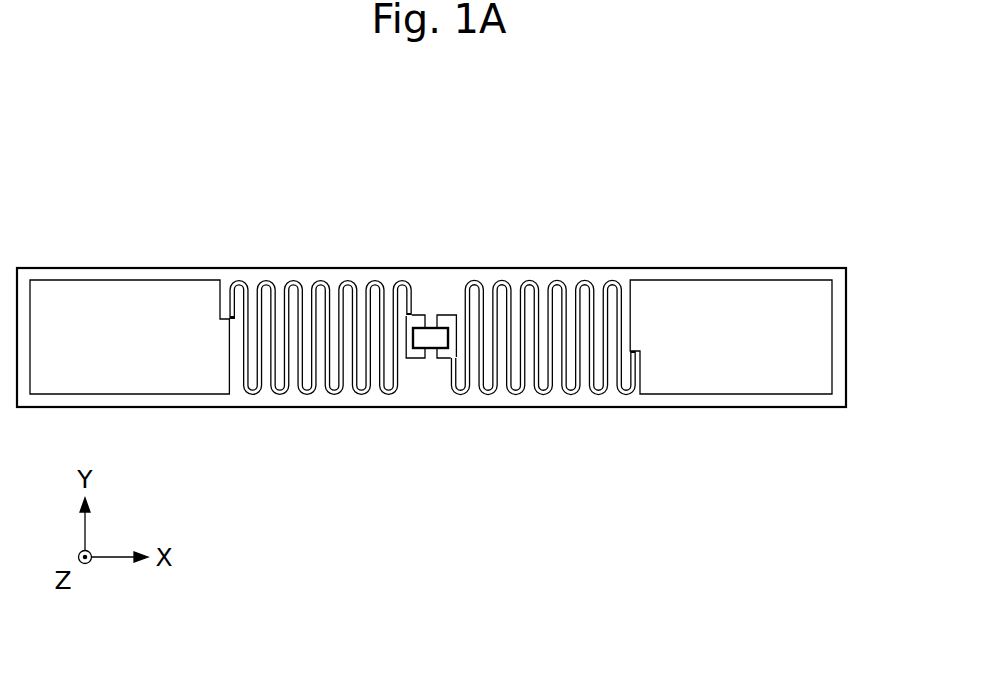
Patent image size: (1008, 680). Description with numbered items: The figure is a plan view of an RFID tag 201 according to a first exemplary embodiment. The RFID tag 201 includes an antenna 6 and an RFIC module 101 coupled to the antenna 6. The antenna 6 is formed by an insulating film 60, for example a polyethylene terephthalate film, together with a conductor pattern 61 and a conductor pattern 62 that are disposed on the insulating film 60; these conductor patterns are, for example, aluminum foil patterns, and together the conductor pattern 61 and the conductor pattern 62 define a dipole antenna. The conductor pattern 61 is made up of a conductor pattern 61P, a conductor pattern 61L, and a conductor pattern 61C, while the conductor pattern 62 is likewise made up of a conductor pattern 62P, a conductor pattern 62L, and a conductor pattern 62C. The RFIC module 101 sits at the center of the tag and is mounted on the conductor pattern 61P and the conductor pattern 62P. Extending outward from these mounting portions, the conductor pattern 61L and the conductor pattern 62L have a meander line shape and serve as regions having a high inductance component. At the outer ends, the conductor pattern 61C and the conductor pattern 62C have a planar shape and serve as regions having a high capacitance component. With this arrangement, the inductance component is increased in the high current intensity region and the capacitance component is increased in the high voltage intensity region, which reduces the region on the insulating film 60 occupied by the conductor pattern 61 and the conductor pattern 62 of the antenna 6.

The RFID tag 201 is at (146, 110).
The antenna 6 is at (812, 220).
The insulating film 60 is at (843, 333).
The conductor pattern 61 is at (94, 198).
The conductor pattern 61C is at (120, 297).
The conductor pattern 61L is at (316, 283).
The conductor pattern 61P is at (417, 316).
The conductor pattern 62 is at (413, 475).
The conductor pattern 62C is at (740, 377).
The conductor pattern 62L is at (543, 396).
The conductor pattern 62P is at (441, 360).
The RFIC module 101 is at (434, 312).